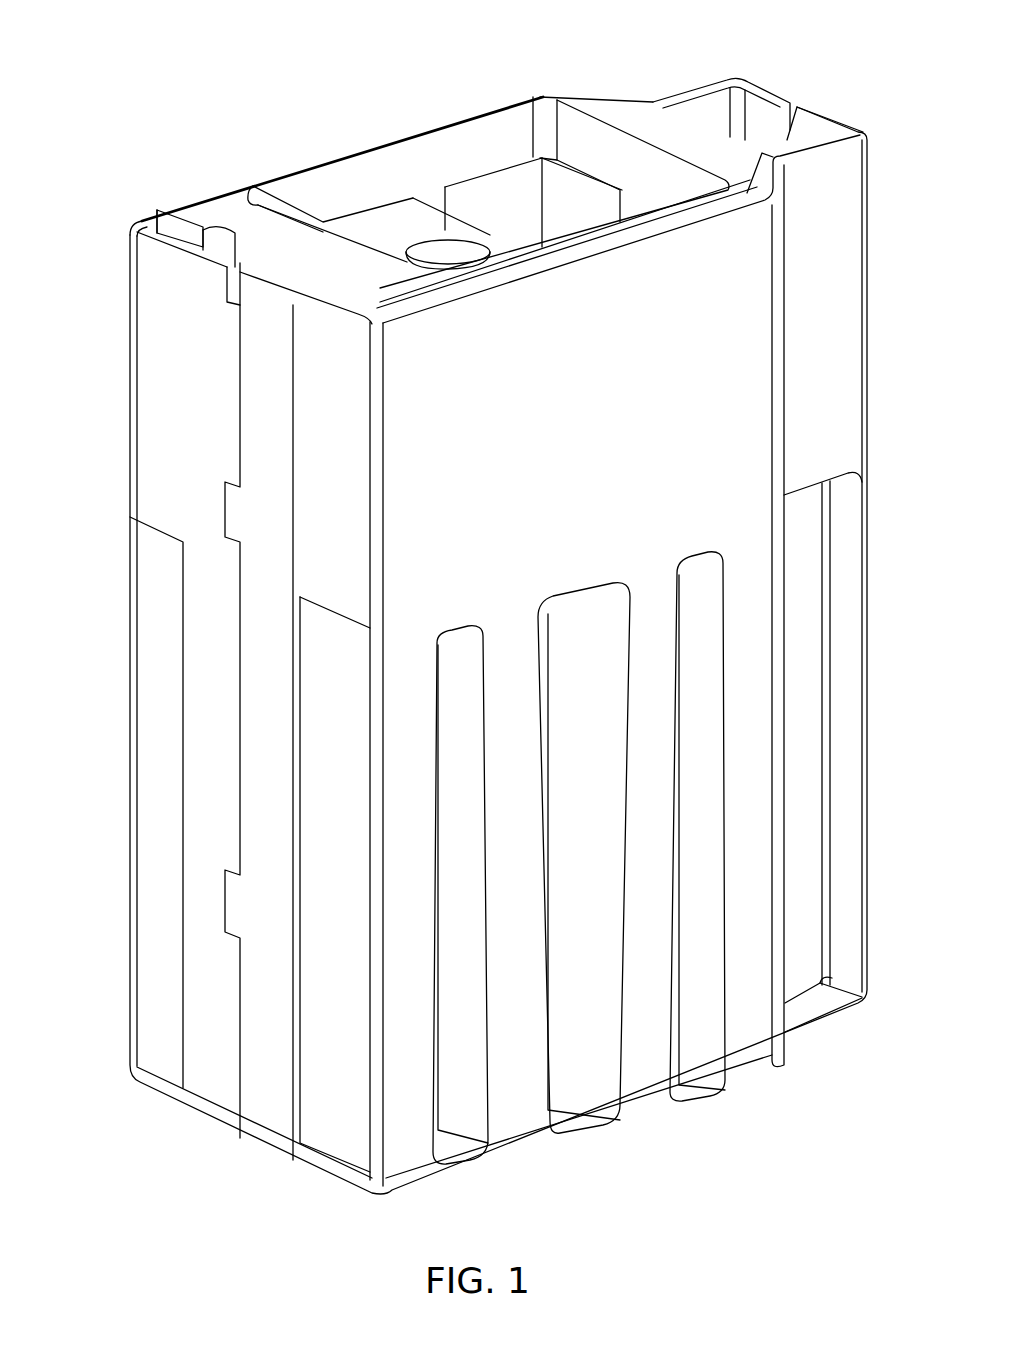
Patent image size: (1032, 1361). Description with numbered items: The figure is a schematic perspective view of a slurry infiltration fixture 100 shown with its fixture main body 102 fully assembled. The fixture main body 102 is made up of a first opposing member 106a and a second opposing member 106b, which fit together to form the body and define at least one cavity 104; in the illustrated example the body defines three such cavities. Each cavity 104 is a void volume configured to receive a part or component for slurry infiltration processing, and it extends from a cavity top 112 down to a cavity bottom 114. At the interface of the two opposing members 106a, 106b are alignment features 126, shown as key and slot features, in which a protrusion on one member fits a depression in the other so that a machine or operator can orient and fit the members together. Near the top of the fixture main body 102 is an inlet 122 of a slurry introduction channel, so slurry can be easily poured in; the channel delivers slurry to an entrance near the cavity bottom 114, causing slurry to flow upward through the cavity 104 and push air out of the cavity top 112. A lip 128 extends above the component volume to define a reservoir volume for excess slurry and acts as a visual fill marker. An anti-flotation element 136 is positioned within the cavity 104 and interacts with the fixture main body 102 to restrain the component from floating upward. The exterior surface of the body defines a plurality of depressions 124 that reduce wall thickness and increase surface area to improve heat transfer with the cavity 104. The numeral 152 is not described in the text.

The slurry infiltration fixture 100 is at (124, 90).
The fixture main body 102 is at (146, 320).
The cavity 104 is at (490, 188).
The first opposing member 106a is at (147, 383).
The second opposing member 106b is at (258, 393).
The cavity top 112 is at (808, 134).
The cavity bottom 114 is at (810, 1008).
The inlet 122 is at (437, 257).
The depressions 124 is at (445, 1150).
The alignment features 126 is at (215, 918).
The lip 128 is at (708, 102).
The anti-flotation element 136 is at (206, 212).
The top rail 152 is at (410, 200).